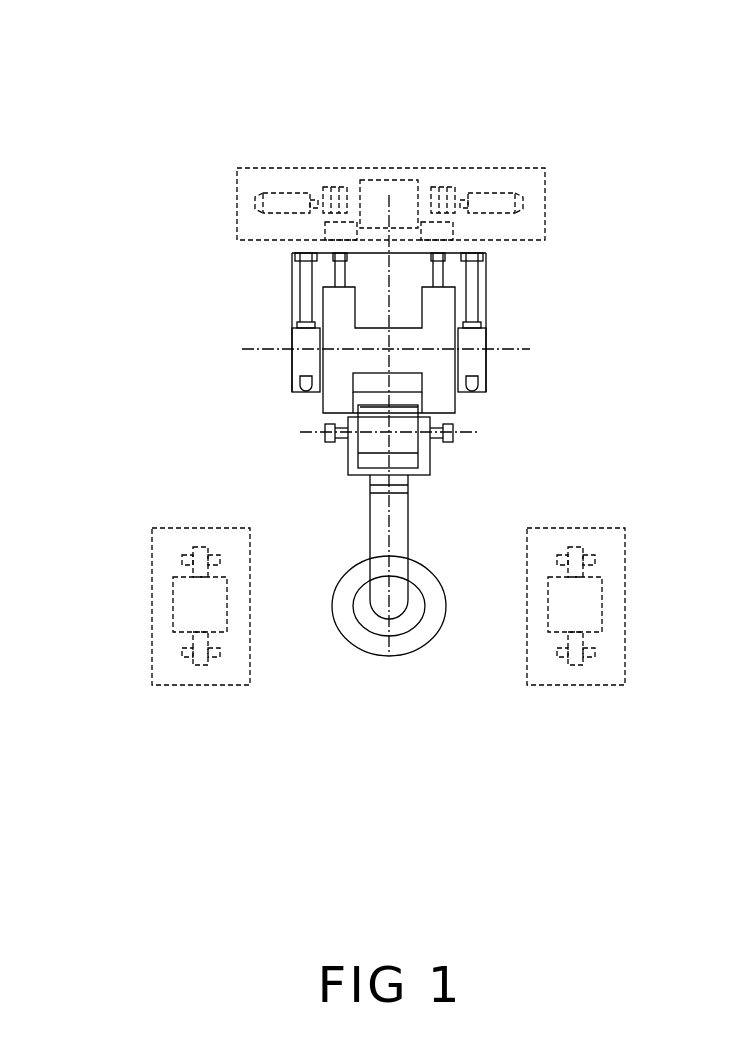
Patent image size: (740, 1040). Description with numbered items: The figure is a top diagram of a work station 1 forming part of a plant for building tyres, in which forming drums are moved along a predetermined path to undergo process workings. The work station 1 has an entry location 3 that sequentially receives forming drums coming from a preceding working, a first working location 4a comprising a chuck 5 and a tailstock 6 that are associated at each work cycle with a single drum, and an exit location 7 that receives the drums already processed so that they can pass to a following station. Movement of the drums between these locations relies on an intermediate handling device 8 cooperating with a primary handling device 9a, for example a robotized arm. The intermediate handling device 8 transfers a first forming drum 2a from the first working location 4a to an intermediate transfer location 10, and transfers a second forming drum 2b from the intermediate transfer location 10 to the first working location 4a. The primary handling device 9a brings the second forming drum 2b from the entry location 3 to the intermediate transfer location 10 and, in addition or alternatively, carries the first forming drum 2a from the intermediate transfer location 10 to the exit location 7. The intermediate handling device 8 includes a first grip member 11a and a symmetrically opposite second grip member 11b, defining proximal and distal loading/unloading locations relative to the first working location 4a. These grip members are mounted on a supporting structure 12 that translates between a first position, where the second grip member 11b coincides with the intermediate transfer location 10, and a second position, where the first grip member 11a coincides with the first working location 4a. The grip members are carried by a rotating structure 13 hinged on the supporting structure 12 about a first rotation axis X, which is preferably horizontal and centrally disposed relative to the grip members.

The work station 1 is at (95, 70).
The first forming drum 2a is at (405, 188).
The second forming drum 2b is at (405, 445).
The entry location 3 is at (177, 673).
The first working location 4a is at (548, 183).
The chuck 5 is at (287, 197).
The tailstock 6 is at (493, 198).
The exit location 7 is at (603, 668).
The intermediate handling device 8 is at (287, 333).
The primary handling device 9a is at (377, 627).
The intermediate transfer location 10 is at (325, 457).
The first grip member 11a is at (290, 272).
The second grip member 11b is at (327, 445).
The supporting structure 12 is at (290, 369).
The rotating structure 13 is at (483, 361).
The first rotation axis X is at (531, 347).